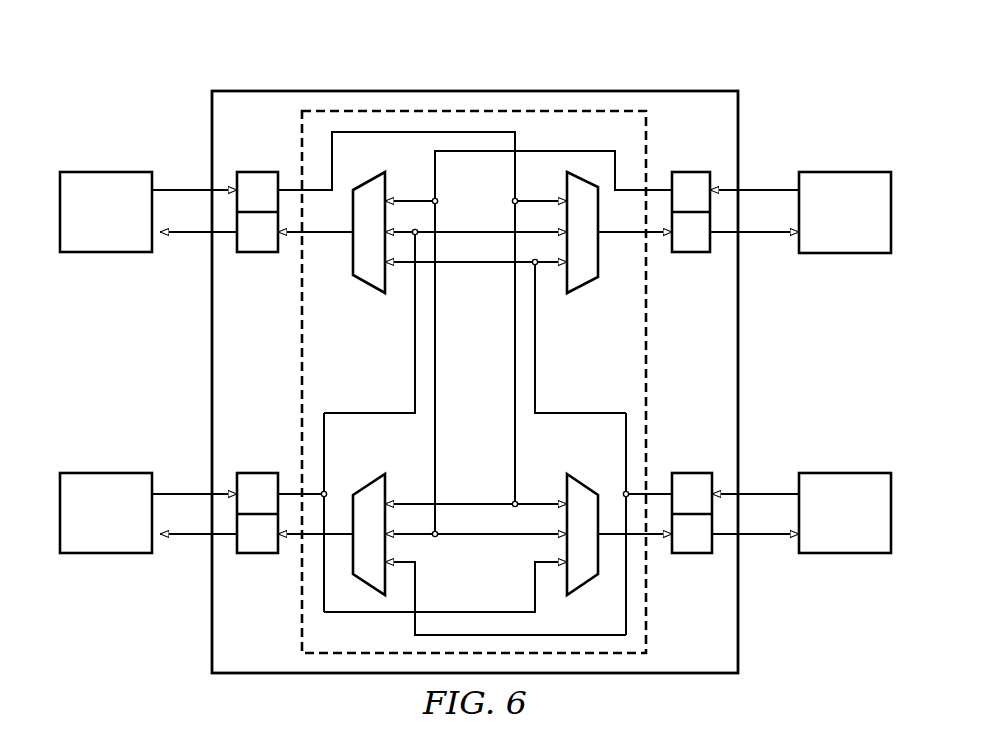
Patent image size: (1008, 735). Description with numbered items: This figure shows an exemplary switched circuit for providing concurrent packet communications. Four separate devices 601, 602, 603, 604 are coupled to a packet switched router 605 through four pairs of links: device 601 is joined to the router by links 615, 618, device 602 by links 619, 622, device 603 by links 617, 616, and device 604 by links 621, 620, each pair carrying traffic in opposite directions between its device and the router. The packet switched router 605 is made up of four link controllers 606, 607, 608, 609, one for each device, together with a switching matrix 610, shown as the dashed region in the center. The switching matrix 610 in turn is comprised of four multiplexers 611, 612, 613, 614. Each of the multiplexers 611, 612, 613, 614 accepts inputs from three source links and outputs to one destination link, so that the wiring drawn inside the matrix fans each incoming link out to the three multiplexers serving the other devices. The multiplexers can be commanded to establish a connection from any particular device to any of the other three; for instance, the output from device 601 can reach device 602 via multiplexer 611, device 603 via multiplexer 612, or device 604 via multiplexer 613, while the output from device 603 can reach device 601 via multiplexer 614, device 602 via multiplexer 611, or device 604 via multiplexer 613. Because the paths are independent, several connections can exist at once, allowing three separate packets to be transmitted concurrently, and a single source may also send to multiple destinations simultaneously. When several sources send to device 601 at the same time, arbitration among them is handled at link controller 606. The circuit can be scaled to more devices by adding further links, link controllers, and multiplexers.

The device 601 is at (106, 171).
The device 602 is at (846, 171).
The device 603 is at (846, 555).
The device 604 is at (106, 555).
The packet switched router 605 is at (362, 90).
The link controller 606 is at (258, 171).
The link controller 607 is at (692, 171).
The link controller 608 is at (692, 555).
The link controller 609 is at (258, 555).
The switching matrix 610 is at (300, 362).
The multiplexer 611 is at (584, 286).
The multiplexer 612 is at (582, 480).
The multiplexer 613 is at (369, 480).
The multiplexer 614 is at (366, 286).
The input link 615 is at (185, 189).
The output link 616 is at (764, 536).
The input link 617 is at (764, 493).
The output link 618 is at (186, 234).
The input link 619 is at (764, 189).
The output link 620 is at (186, 536).
The input link 621 is at (185, 493).
The output link 622 is at (764, 234).